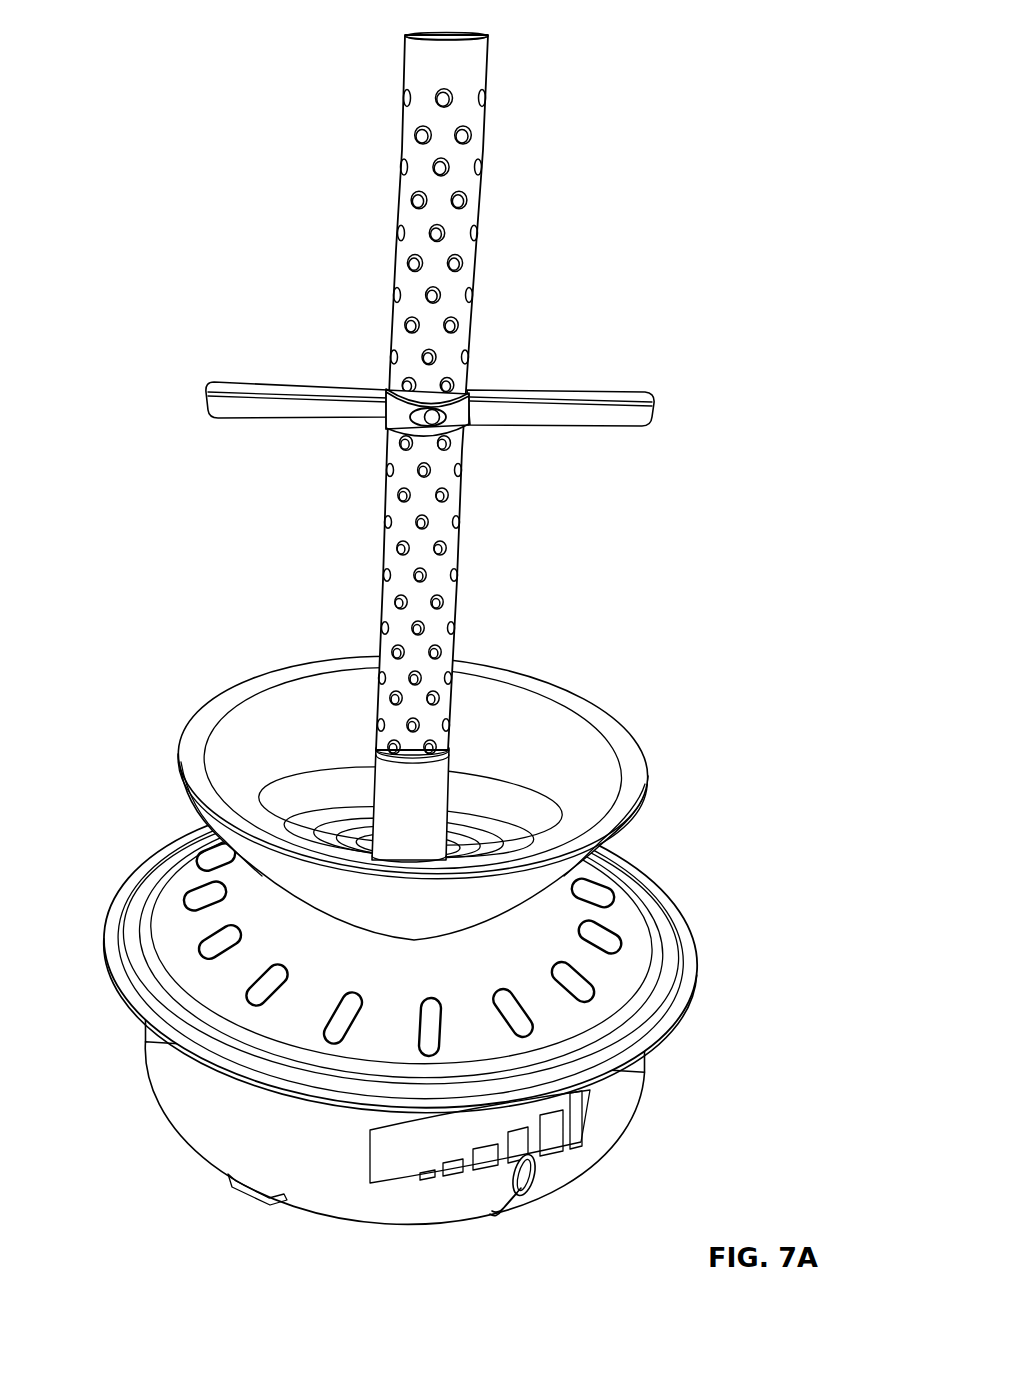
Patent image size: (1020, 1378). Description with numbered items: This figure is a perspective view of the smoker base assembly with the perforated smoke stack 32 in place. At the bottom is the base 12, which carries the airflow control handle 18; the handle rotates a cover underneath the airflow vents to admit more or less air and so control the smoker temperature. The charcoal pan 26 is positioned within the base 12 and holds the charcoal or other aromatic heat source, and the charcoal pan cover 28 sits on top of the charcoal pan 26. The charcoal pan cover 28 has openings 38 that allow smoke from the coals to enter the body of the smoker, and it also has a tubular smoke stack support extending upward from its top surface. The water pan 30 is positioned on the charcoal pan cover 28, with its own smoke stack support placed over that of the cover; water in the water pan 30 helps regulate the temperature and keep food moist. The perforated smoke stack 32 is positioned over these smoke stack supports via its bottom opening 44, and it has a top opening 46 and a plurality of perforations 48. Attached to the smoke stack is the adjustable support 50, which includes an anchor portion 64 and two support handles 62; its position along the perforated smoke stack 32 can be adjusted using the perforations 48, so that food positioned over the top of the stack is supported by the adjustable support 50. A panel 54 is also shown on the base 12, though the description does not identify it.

The base 12 is at (195, 1104).
The airflow control handle 18 is at (537, 1183).
The charcoal pan 26 is at (133, 935).
The charcoal pan cover 28 is at (625, 910).
The water pan 30 is at (600, 721).
The perforated smoke stack 32 is at (465, 386).
The openings 38 is at (193, 891).
The bottom opening 44 is at (418, 792).
The top opening 46 is at (470, 52).
The perforations 48 is at (482, 98).
The adjustable support 50 is at (441, 389).
The indicator label 54 is at (402, 1157).
The support handles 62 is at (273, 384).
The anchor portion 64 is at (392, 418).